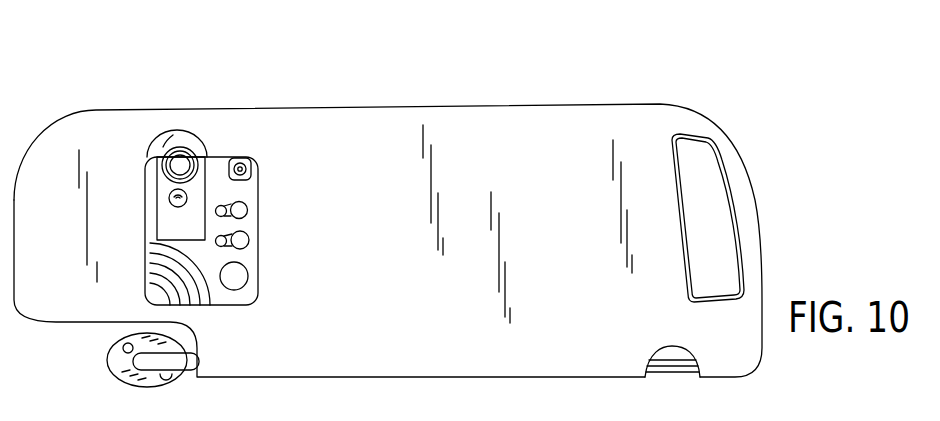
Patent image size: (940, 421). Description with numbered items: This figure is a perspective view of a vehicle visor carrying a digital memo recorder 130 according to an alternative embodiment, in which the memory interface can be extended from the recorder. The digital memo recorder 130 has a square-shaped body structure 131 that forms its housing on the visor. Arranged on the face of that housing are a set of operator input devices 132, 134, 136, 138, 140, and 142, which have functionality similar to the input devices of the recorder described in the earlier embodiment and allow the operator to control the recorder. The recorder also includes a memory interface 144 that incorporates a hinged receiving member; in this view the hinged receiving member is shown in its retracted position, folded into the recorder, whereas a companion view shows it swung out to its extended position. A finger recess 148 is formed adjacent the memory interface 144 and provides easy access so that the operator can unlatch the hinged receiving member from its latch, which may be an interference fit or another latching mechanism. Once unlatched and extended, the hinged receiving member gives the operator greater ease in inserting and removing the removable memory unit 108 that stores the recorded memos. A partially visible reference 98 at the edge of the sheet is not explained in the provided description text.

The digital memo recorder 130 is at (252, 124).
The body structure 131 is at (213, 291).
The operator input device 132 is at (238, 281).
The operator input device 134 is at (249, 242).
The operator input device 136 is at (229, 238).
The operator input device 138 is at (223, 206).
The operator input device 140 is at (248, 210).
The operator input device 142 is at (245, 163).
The memory interface 144 is at (163, 192).
The finger recess 148 is at (166, 147).
The removable memory unit 108 is at (185, 163).
The device 98 is at (7, 97).